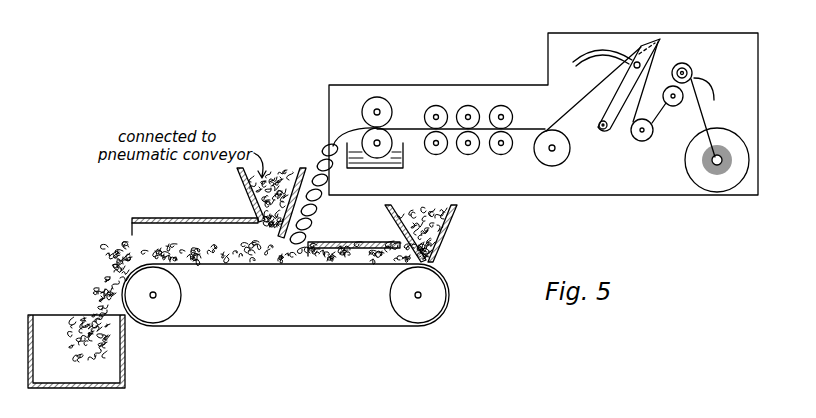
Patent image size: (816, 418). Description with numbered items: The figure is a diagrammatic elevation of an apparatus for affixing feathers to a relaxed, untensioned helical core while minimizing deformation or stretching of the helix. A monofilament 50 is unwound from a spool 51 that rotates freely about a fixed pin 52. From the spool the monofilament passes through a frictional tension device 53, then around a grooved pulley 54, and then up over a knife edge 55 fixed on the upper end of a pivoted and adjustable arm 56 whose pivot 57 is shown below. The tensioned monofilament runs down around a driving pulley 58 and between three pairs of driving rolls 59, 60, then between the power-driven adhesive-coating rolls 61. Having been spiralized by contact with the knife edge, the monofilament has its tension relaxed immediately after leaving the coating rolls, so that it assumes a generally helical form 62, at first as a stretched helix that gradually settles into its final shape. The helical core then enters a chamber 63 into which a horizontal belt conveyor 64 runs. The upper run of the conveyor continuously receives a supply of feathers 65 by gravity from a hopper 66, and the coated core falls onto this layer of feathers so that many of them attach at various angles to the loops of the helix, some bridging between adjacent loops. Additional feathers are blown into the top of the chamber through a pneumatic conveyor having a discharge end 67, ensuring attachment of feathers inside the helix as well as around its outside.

The monofilament 50 is at (728, 98).
The spool 51 is at (717, 192).
The fixed pin 52 is at (706, 163).
The frictional tension device 53 is at (709, 69).
The grooved pulley 54 is at (640, 141).
The knife edge 55 is at (661, 40).
The pivoted and adjustable arm 56 is at (610, 104).
The pivot 57 is at (601, 129).
The driving pulley 58 is at (540, 153).
The driving rolls 59 is at (497, 108).
The driving rolls 60 is at (496, 149).
The adhesive-coating rolls 61 is at (393, 122).
The helical form of monofilament 62 is at (313, 157).
The chamber 63 is at (193, 218).
The horizontal belt conveyor 64 is at (303, 327).
The feathers 65 is at (373, 262).
The hopper 66 is at (456, 221).
The discharge end of pneumatic conveyor 67 is at (280, 178).